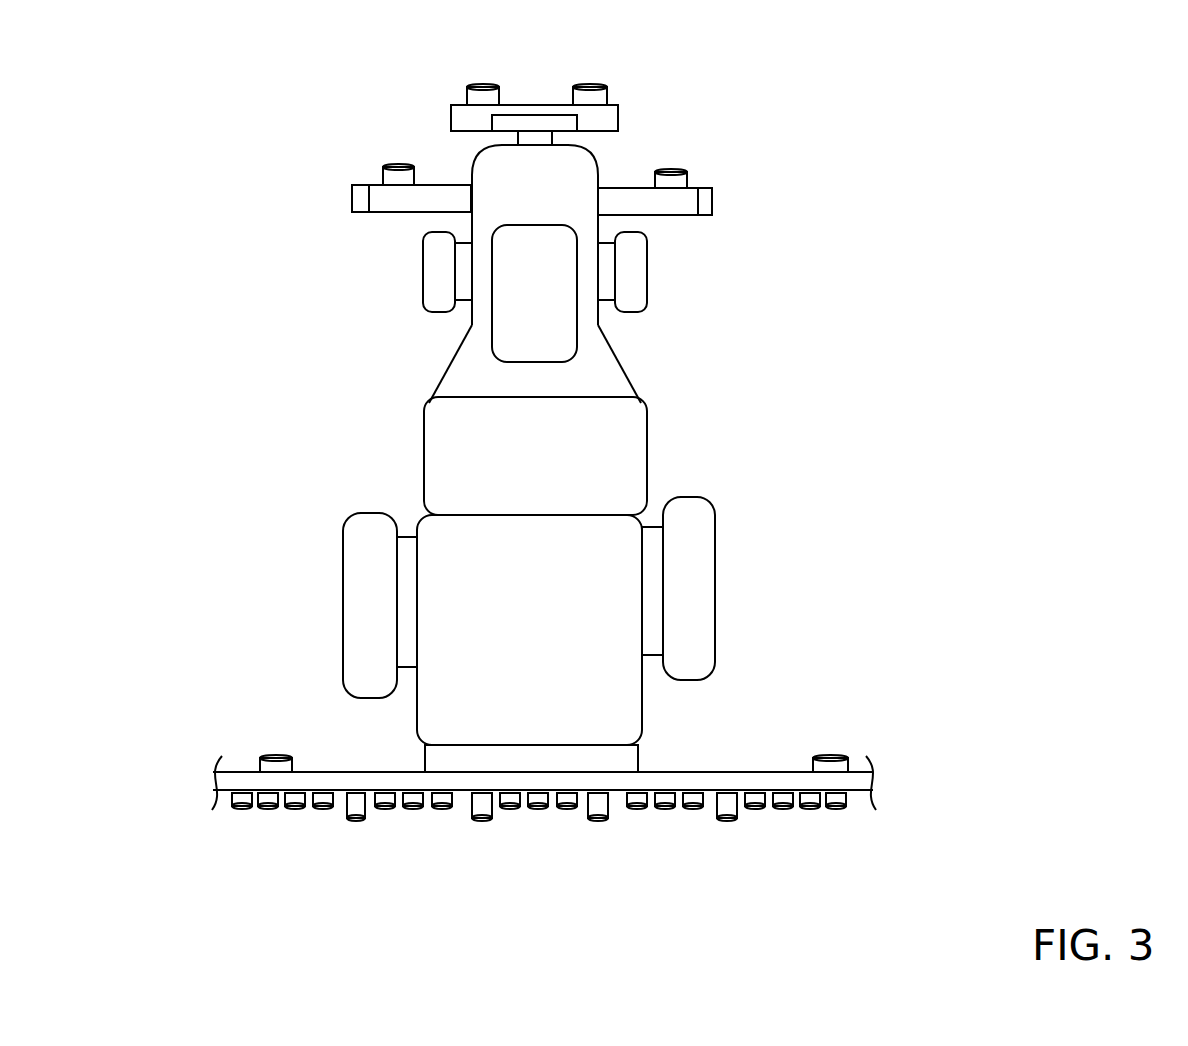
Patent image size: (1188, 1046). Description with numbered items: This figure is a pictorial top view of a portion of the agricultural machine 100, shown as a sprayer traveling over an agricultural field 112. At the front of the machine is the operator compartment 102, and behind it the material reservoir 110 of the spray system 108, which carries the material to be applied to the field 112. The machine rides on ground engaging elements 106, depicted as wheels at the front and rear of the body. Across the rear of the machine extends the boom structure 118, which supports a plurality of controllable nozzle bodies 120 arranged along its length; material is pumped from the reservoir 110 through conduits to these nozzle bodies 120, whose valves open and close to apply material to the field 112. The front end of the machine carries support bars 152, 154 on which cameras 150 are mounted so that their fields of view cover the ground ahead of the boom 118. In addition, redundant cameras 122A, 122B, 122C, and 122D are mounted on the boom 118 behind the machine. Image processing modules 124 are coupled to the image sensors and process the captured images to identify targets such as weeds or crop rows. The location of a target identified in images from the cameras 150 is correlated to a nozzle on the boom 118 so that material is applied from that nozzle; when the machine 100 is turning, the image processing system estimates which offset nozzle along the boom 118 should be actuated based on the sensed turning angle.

The agricultural machine 100 is at (212, 405).
The operator compartment 102 is at (535, 456).
The ground engaging elements 106 is at (423, 292).
The spray system 108 is at (208, 740).
The material reservoir 110 is at (529, 643).
The agricultural field 112 is at (474, 128).
The boom structure 118 is at (751, 755).
The nozzle bodies 120 is at (323, 809).
The camera 122A is at (355, 819).
The camera 122B is at (481, 819).
The camera 122C is at (597, 819).
The camera 122D is at (726, 819).
The image processing module 124 is at (578, 123).
The cameras 150 is at (483, 87).
The support bar 152 is at (532, 105).
The support bar 154 is at (452, 185).